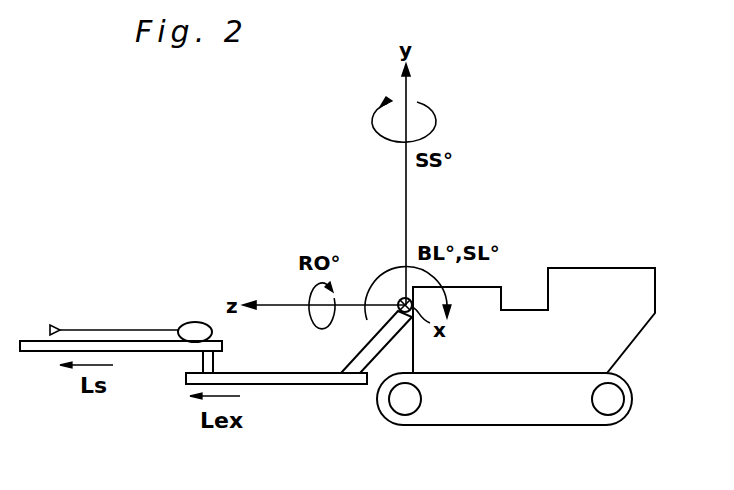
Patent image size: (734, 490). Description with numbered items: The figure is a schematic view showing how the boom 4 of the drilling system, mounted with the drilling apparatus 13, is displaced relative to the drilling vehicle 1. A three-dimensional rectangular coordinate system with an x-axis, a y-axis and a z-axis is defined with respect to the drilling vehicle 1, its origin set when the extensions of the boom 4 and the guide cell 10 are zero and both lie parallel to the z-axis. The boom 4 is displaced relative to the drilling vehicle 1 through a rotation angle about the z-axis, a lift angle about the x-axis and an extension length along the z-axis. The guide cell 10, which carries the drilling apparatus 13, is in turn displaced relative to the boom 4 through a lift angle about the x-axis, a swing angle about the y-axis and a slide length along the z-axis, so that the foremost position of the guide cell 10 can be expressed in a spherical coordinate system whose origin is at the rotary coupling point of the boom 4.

The drilling vehicle 1 is at (493, 286).
The boom 4 is at (317, 384).
The guide cell 10 is at (37, 352).
The drilling apparatus 13 is at (193, 321).